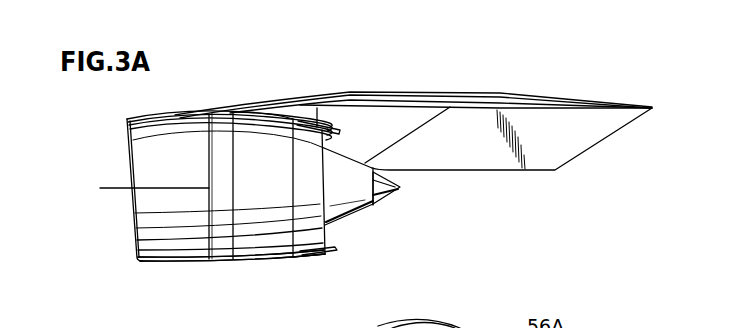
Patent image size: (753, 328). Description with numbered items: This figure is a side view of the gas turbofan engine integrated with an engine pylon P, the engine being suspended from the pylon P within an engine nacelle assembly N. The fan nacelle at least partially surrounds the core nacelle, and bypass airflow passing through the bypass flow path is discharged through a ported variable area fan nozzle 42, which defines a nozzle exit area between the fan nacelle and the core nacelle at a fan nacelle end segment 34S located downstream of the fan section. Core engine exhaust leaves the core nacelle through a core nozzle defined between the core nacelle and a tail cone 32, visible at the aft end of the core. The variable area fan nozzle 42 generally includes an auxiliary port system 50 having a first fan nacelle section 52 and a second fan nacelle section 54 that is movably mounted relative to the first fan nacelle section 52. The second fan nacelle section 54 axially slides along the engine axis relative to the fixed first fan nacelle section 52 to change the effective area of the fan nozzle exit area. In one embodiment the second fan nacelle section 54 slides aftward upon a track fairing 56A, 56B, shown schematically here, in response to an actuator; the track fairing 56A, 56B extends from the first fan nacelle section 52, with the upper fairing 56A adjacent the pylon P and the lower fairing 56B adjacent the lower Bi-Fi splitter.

The engine nacelle assembly N is at (172, 276).
The auxiliary port system 50 is at (287, 116).
The first fan nacelle section 52 is at (249, 249).
The variable area fan nozzle 42 is at (275, 274).
The second fan nacelle section 54 is at (312, 254).
The track fairing 56A is at (327, 127).
The track fairing 56B is at (333, 253).
The fan nacelle end segment 34S is at (326, 227).
The tail cone 32 is at (401, 188).
The engine pylon P is at (543, 122).